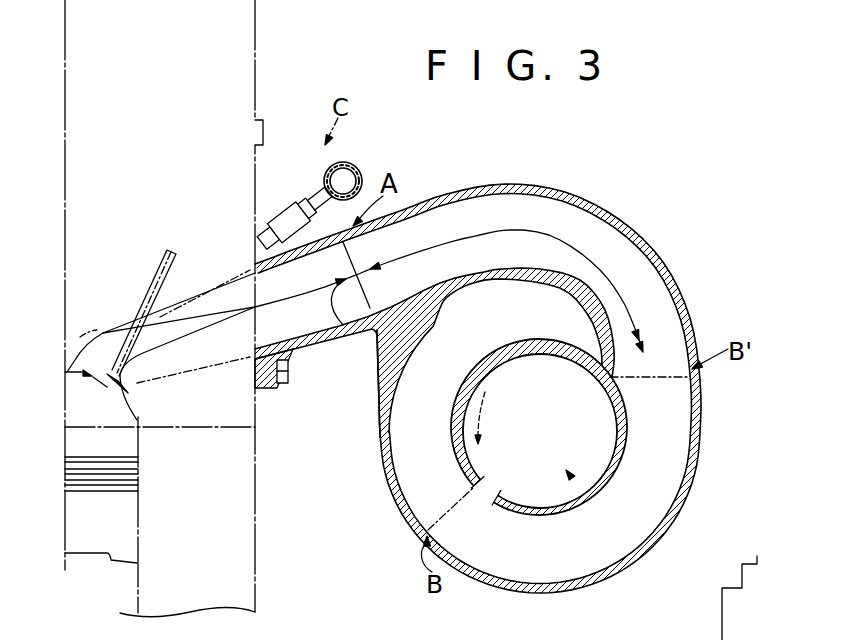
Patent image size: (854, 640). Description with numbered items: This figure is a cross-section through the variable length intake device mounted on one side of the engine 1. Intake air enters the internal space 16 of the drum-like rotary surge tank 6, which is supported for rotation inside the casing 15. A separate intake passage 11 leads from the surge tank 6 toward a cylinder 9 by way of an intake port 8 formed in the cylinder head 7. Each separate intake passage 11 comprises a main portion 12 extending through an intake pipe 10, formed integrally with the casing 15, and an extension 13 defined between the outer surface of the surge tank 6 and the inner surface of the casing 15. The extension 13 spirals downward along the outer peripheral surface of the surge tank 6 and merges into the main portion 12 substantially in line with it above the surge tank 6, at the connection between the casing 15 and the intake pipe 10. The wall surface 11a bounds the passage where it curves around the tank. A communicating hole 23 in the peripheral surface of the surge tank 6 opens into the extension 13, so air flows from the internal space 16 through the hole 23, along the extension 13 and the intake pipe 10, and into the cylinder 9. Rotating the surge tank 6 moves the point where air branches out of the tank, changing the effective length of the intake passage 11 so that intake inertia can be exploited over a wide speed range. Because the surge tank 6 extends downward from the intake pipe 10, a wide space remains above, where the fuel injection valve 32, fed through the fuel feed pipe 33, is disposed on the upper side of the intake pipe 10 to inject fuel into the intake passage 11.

The engine 1 is at (272, 66).
The rotary surge tank 6 is at (546, 510).
The cylinder head 7 is at (254, 410).
The intake port 8 is at (180, 312).
The cylinder 9 is at (137, 530).
The intake pipe 10 is at (317, 349).
The separate intake passage 11 is at (416, 251).
The inner wall of intake passage 11a is at (563, 290).
The main portion 12 is at (348, 327).
The extension 13 is at (527, 232).
The casing 15 is at (660, 262).
The internal space 16 is at (569, 476).
The communicating hole 23 is at (463, 455).
The fuel injection valve 32 is at (295, 212).
The fuel feed pipe 33 is at (362, 178).